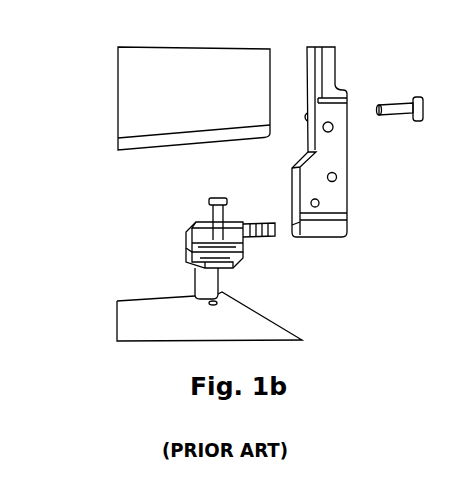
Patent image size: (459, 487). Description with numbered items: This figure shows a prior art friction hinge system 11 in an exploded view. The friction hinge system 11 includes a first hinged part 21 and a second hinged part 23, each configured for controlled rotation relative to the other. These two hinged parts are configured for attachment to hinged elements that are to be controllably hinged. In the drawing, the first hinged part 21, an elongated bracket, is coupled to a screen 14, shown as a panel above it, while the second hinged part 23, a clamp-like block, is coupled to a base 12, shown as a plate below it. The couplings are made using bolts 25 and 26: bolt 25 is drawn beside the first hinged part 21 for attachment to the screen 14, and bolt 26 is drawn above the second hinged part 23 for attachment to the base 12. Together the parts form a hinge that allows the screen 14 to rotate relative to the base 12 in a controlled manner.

The friction hinge system 11 is at (310, 279).
The base 12 is at (248, 323).
The screen 14 is at (238, 73).
The first hinged part 21 is at (335, 157).
The second hinged part 23 is at (235, 240).
The bolt 25 is at (402, 112).
The bolt 26 is at (213, 215).